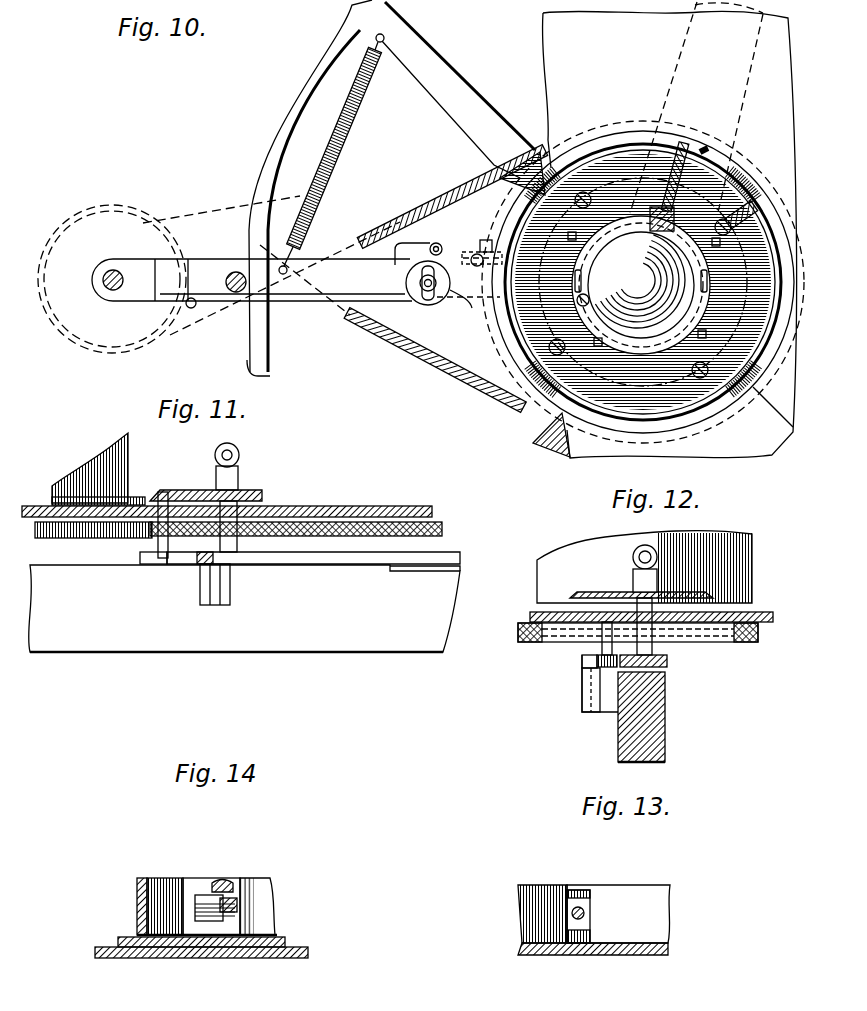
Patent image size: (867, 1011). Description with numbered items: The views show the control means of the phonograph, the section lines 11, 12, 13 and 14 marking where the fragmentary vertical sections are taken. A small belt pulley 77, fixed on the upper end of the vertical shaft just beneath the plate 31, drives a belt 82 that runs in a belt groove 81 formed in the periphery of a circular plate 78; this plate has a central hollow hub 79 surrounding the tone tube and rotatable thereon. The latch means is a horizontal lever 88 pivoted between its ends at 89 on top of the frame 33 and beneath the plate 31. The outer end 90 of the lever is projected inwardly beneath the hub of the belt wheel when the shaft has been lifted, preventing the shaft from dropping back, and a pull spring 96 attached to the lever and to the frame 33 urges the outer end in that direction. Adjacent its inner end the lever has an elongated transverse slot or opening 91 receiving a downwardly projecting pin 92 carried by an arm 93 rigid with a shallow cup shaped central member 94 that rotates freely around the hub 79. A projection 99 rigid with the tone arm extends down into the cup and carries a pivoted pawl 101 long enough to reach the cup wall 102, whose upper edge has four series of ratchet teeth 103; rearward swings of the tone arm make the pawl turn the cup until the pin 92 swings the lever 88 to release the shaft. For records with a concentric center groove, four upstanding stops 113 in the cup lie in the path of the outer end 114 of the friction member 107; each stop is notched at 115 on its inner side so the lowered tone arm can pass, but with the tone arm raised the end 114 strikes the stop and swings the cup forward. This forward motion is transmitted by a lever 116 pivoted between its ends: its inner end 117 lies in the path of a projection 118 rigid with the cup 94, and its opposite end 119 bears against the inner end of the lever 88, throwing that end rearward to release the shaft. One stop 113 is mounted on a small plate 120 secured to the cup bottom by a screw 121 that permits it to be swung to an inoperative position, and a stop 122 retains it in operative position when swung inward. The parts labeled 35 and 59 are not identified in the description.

In FIG. 10, the section line 11— 11 is at (365, 235).
In FIG. 10, the section line 12— 12 is at (415, 189).
In FIG. 14, the section line 13— 13 is at (220, 978).
In FIG. 13, the section line 14— 14 is at (582, 972).
In FIG. 10, the plate 31 is at (780, 442).
In FIG. 11, the plate 31 is at (405, 507).
In FIG. 12, the plate 31 is at (766, 612).
In FIG. 14, the plate 31 is at (187, 964).
In FIG. 10, the frame 33 is at (346, 36).
In FIG. 11, the frame 33 is at (360, 645).
In FIG. 12, the frame 33 is at (667, 716).
In FIG. 10, the casing 35 is at (682, 44).
In FIG. 10, the drive belt 59 is at (64, 321).
In FIG. 10, the belt pulley 77 is at (80, 342).
In FIG. 11, the circular plate 78 is at (100, 540).
In FIG. 12, the circular plate 78 is at (562, 644).
In FIG. 14, the central hollow hub 79 is at (267, 916).
In FIG. 10, the belt groove 81 is at (706, 152).
In FIG. 11, the belt groove 81 is at (150, 566).
In FIG. 10, the belt 82 is at (396, 240).
In FIG. 11, the belt 82 is at (442, 528).
In FIG. 12, the belt 82 is at (545, 643).
In FIG. 10, the horizontal lever 88 is at (342, 292).
In FIG. 12, the horizontal lever 88 is at (669, 661).
In FIG. 10, the pivot 89 is at (235, 294).
In FIG. 10, the outer end of lever 90 is at (122, 297).
In FIG. 10, the transverse slot 91 is at (418, 296).
In FIG. 10, the downwardly projecting pin 92 is at (440, 306).
In FIG. 11, the downwardly projecting pin 92 is at (242, 485).
In FIG. 12, the downwardly projecting pin 92 is at (658, 572).
In FIG. 10, the arm 93 is at (462, 312).
In FIG. 11, the arm 93 is at (190, 488).
In FIG. 12, the arm 93 is at (696, 595).
In FIG. 10, the cup shaped central member 94 is at (612, 412).
In FIG. 11, the cup shaped central member 94 is at (130, 469).
In FIG. 12, the cup shaped central member 94 is at (728, 548).
In FIG. 14, the cup shaped central member 94 is at (282, 936).
In FIG. 13, the cup shaped central member 94 is at (668, 948).
In FIG. 10, the pull spring 96 is at (333, 148).
In FIG. 10, the projection 99 is at (644, 271).
In FIG. 14, the projection 99 is at (236, 884).
In FIG. 10, the pawl 101 is at (684, 140).
In FIG. 14, the pawl 101 is at (220, 878).
In FIG. 10, the cup wall 102 is at (612, 150).
In FIG. 14, the cup wall 102 is at (147, 898).
In FIG. 13, the cup wall 102 is at (656, 885).
In FIG. 10, the ratchet teeth 103 is at (552, 175).
In FIG. 14, the ratchet teeth 103 is at (136, 879).
In FIG. 13, the ratchet teeth 103 is at (522, 885).
In FIG. 10, the friction member 107 is at (655, 194).
In FIG. 14, the friction member 107 is at (226, 916).
In FIG. 13, the friction member 107 is at (585, 913).
In FIG. 10, the stops 113 is at (660, 388).
In FIG. 14, the stops 113 is at (202, 938).
In FIG. 13, the stops 113 is at (570, 912).
In FIG. 14, the outer end of friction member 114 is at (216, 940).
In FIG. 13, the outer end of friction member 114 is at (590, 903).
In FIG. 14, the notch 115 is at (195, 906).
In FIG. 13, the notch 115 is at (590, 895).
In FIG. 10, the lever 116 is at (475, 253).
In FIG. 11, the lever 116 is at (224, 607).
In FIG. 12, the lever 116 is at (590, 658).
In FIG. 10, the inner end of lever 117 is at (490, 238).
In FIG. 11, the inner end of lever 117 is at (160, 492).
In FIG. 10, the projection 118 is at (503, 257).
In FIG. 11, the projection 118 is at (158, 563).
In FIG. 12, the projection 118 is at (604, 627).
In FIG. 10, the opposite end of lever 119 is at (423, 198).
In FIG. 11, the opposite end of lever 119 is at (281, 550).
In FIG. 12, the opposite end of lever 119 is at (618, 664).
In FIG. 10, the small plate 120 is at (760, 180).
In FIG. 14, the small plate 120 is at (161, 940).
In FIG. 10, the screw 121 is at (755, 200).
In FIG. 14, the screw 121 is at (151, 940).
In FIG. 10, the stop 122 is at (748, 212).